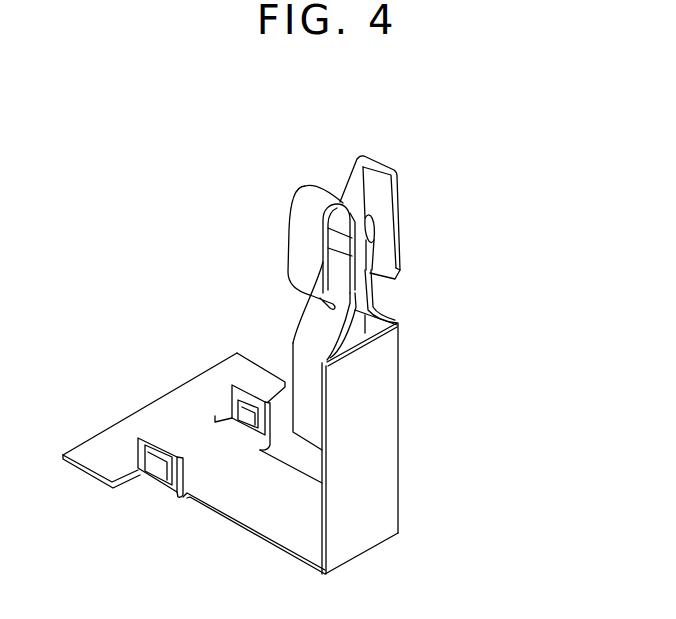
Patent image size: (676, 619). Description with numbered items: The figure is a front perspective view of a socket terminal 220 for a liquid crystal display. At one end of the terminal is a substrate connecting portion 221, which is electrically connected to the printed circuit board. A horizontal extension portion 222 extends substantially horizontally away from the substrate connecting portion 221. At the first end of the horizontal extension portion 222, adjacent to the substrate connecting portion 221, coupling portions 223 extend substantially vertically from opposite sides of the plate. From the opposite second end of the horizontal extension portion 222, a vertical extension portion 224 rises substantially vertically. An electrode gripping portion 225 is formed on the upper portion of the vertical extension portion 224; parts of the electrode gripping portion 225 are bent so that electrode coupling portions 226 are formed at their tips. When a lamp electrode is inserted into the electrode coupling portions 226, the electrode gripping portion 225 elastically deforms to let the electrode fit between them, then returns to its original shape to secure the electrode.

The socket terminal 220 is at (396, 165).
The substrate connecting portion 221 is at (95, 445).
The horizontal extension portion 222 is at (250, 502).
The coupling portions 223 is at (143, 438).
The vertical extension portion 224 is at (388, 382).
The electrode gripping portion 225 is at (316, 188).
The electrode coupling portions 226 is at (366, 244).